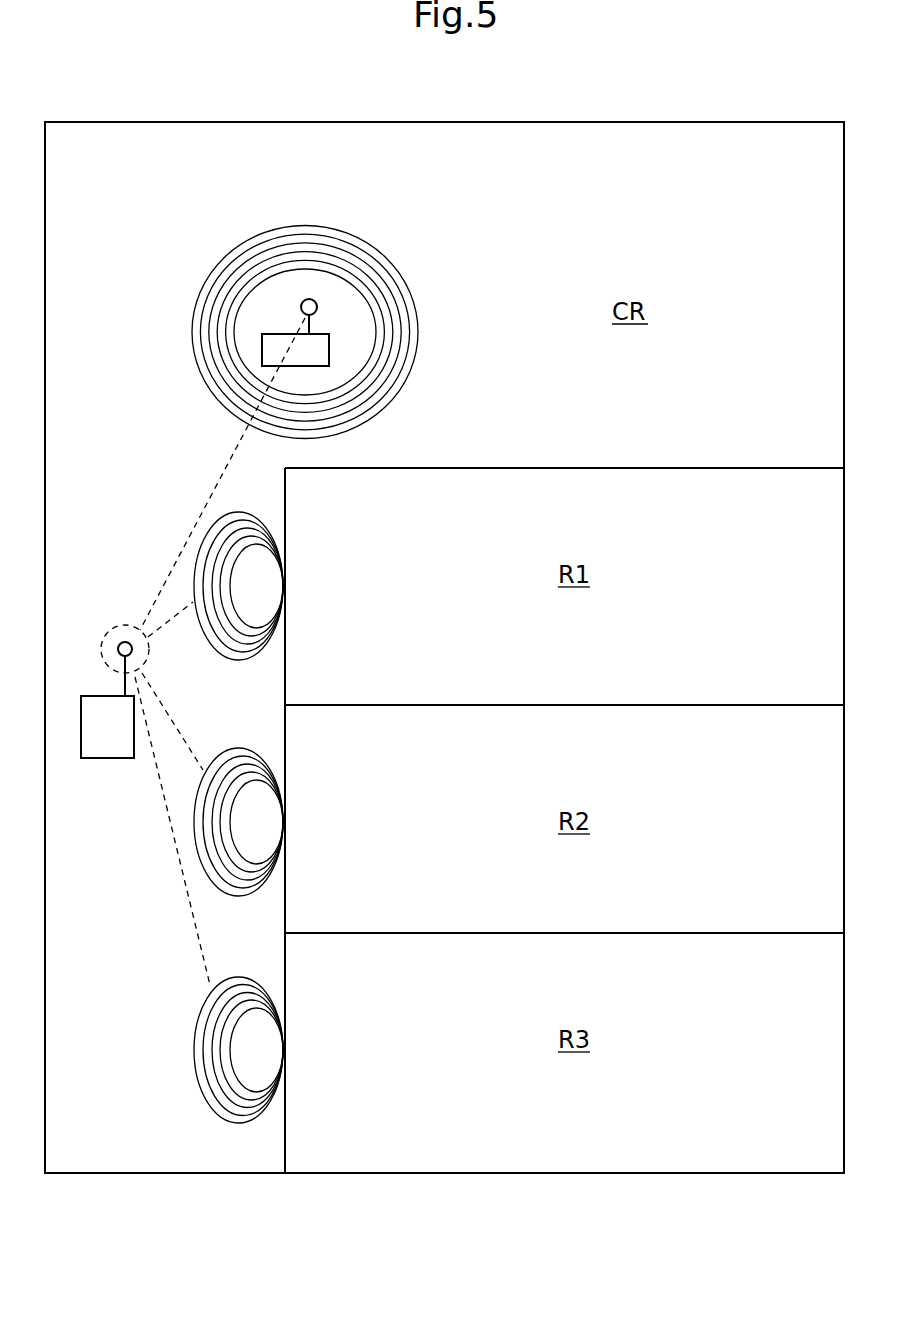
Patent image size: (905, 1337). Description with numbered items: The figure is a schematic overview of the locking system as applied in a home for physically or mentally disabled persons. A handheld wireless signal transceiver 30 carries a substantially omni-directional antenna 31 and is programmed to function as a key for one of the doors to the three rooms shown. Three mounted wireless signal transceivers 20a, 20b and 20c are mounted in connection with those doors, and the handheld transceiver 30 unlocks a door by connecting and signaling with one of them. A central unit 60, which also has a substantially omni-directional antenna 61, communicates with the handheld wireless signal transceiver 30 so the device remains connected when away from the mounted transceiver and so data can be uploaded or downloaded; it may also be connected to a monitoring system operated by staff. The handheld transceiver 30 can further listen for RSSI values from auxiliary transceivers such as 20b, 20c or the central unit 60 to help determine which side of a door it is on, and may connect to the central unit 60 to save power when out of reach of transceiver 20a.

The substantially omni-directional antenna 61 is at (318, 306).
The central unit 60 is at (329, 346).
The substantially omni-directional antenna 31 is at (123, 641).
The handheld wireless signal transceiver 30 is at (110, 745).
The mounted wireless signal transceiver 20a is at (287, 583).
The mounted wireless signal transceiver 20b is at (287, 822).
The mounted wireless signal transceiver 20c is at (287, 1048).